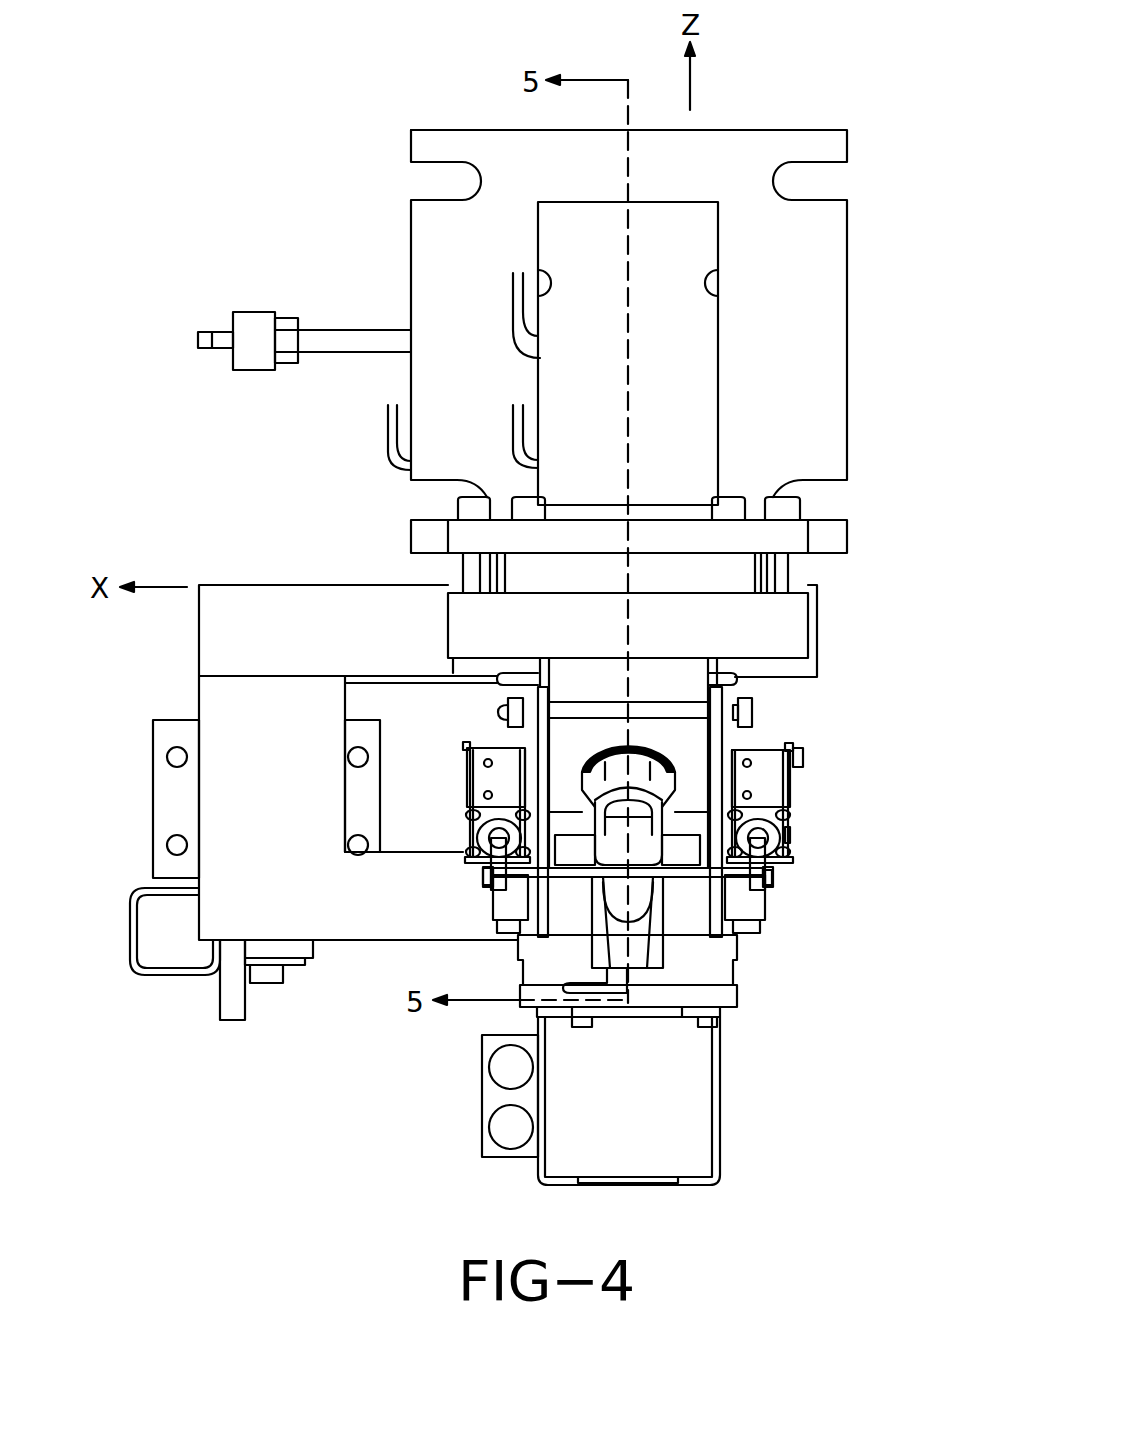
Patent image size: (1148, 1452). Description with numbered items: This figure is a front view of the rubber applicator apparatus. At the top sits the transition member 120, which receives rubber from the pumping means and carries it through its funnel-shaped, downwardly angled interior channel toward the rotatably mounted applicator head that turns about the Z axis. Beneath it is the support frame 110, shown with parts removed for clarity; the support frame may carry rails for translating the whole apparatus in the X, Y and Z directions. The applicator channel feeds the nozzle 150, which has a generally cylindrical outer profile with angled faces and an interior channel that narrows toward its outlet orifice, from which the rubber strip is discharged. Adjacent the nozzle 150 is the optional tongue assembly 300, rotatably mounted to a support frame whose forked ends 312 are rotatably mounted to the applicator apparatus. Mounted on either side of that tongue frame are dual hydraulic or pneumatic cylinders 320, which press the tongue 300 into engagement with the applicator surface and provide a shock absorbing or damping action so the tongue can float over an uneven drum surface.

The support frame 110 is at (792, 640).
The transition member 120 is at (702, 382).
The nozzle 150 is at (635, 837).
The tongue assembly 300 is at (635, 938).
The forked ends 312 is at (718, 740).
The dual hydraulic or pneumatic cylinders 320 is at (485, 773).